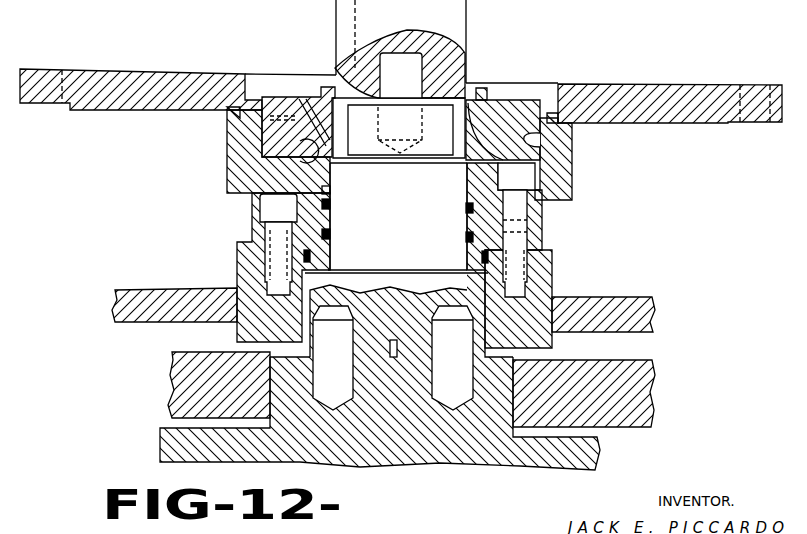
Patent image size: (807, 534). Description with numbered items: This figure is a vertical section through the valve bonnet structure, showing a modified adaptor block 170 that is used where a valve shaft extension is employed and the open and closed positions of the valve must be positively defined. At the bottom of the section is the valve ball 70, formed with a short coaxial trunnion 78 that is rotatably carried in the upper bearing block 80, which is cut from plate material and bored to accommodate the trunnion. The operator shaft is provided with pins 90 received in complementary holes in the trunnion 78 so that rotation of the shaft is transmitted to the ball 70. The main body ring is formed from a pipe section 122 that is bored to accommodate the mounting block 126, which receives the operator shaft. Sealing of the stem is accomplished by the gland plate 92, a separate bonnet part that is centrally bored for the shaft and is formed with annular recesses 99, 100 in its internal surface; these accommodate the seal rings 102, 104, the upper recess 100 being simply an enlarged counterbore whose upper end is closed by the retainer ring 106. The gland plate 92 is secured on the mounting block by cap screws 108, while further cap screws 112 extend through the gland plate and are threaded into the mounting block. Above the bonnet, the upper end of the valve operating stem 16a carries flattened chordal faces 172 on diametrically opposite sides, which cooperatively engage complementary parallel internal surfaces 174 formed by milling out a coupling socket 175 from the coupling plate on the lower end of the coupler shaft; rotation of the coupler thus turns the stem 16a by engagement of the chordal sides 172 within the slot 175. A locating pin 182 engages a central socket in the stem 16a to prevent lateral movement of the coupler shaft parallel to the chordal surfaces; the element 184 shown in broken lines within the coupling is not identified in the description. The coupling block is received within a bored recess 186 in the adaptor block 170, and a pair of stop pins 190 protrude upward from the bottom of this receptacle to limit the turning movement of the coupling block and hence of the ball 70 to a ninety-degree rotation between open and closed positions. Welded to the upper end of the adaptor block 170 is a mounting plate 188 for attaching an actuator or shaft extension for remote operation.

The mounting plate 188 is at (641, 92).
The stop pins 190 is at (278, 92).
The locating pin 182 is at (414, 65).
The flattened chordal faces 172 is at (480, 88).
The parallel internal surfaces 174 is at (323, 133).
The coupling socket 175 is at (320, 152).
The bored recess 186 is at (540, 145).
The adaptor block 170 is at (560, 166).
The gland plate 92 is at (543, 212).
The mounting block 126 is at (541, 274).
The valve ball 70 is at (584, 451).
The trunnion 78 is at (492, 392).
The pins 90 is at (465, 360).
The bearing block 80 is at (615, 372).
The pipe section 122 is at (615, 304).
The cap screws 112 is at (530, 182).
The valve operating stem 16a is at (430, 262).
The cap screws 108 is at (275, 212).
The valve member 184 is at (407, 160).
The retainer ring 106 is at (331, 191).
The seal ring 104 is at (331, 205).
The seal ring 102 is at (331, 234).
The annular recess 100 is at (466, 212).
The annular recess 99 is at (466, 239).